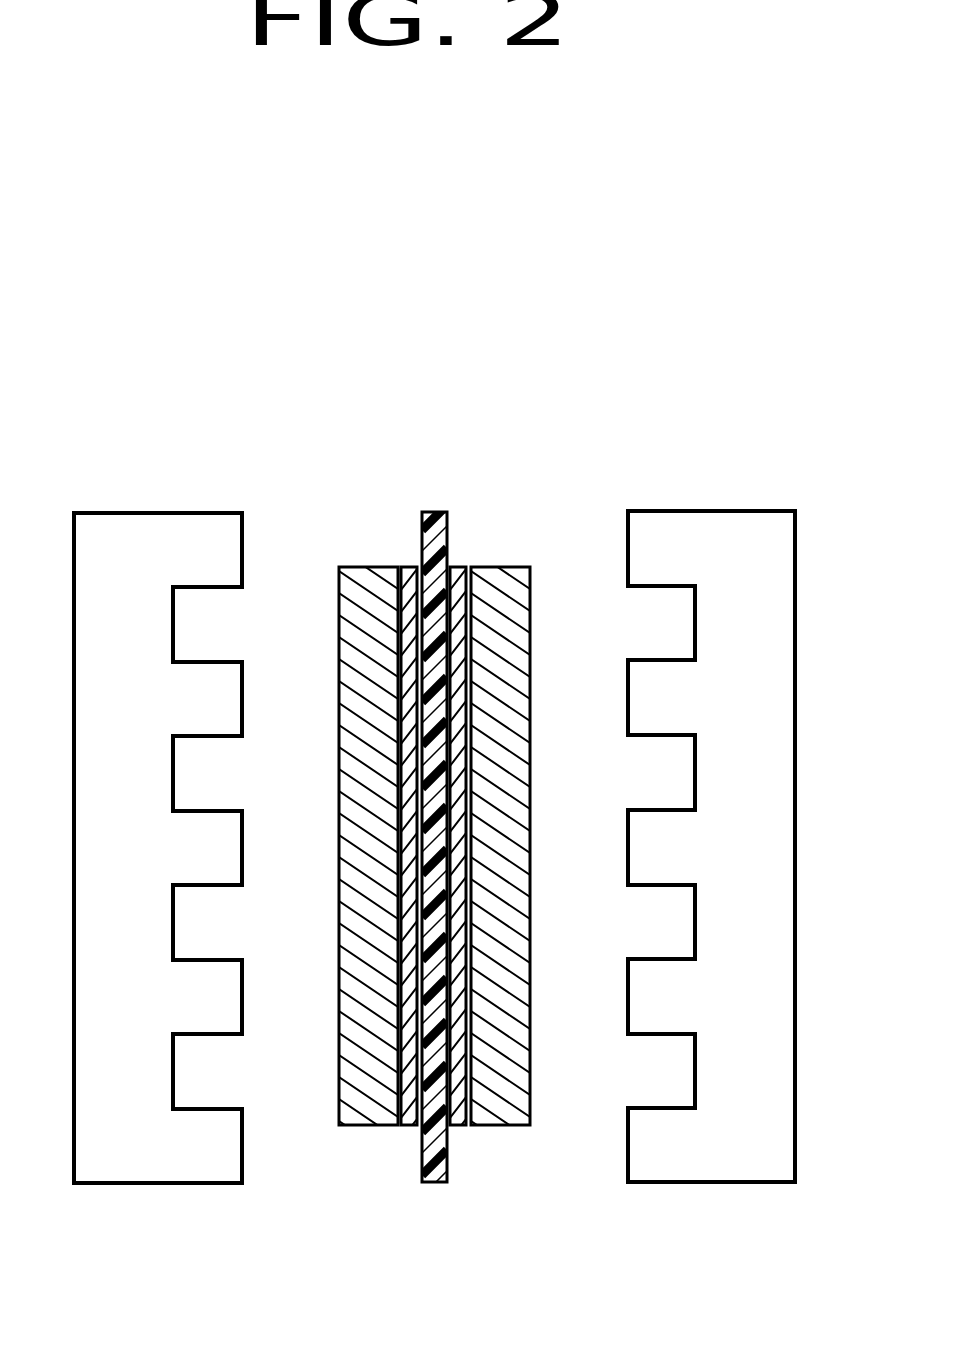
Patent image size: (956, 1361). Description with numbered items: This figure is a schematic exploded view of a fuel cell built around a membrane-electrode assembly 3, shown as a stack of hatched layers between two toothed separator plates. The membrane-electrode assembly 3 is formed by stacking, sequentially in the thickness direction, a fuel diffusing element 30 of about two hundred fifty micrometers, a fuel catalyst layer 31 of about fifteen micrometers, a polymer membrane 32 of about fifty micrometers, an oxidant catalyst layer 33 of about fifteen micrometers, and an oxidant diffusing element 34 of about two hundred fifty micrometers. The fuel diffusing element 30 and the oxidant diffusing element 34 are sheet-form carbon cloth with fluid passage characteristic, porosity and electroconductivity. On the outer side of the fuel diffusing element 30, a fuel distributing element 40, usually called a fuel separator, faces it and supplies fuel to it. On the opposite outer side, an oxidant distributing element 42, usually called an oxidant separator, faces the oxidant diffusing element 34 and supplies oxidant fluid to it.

The membrane-electrode assembly 3 is at (340, 463).
The fuel diffusing element 30 is at (363, 1127).
The fuel catalyst layer 31 is at (407, 1127).
The membrane 32 is at (430, 1183).
The oxidant catalyst layer 33 is at (453, 1127).
The oxidant diffusing element 34 is at (497, 1127).
The fuel distributing element 40 is at (150, 1183).
The oxidant distributing element 42 is at (707, 1182).